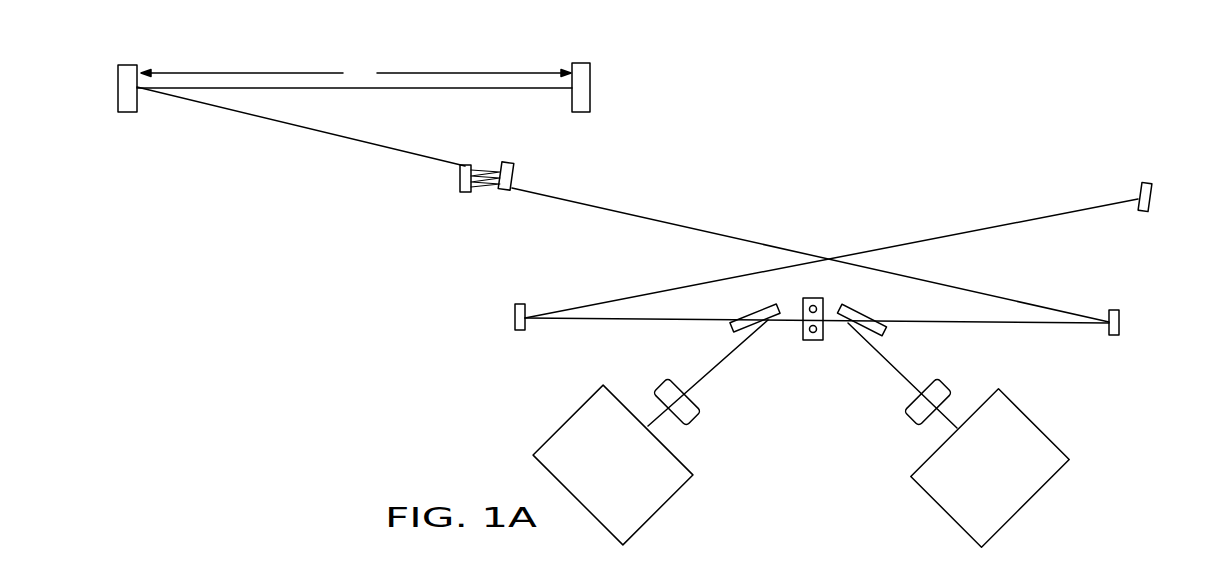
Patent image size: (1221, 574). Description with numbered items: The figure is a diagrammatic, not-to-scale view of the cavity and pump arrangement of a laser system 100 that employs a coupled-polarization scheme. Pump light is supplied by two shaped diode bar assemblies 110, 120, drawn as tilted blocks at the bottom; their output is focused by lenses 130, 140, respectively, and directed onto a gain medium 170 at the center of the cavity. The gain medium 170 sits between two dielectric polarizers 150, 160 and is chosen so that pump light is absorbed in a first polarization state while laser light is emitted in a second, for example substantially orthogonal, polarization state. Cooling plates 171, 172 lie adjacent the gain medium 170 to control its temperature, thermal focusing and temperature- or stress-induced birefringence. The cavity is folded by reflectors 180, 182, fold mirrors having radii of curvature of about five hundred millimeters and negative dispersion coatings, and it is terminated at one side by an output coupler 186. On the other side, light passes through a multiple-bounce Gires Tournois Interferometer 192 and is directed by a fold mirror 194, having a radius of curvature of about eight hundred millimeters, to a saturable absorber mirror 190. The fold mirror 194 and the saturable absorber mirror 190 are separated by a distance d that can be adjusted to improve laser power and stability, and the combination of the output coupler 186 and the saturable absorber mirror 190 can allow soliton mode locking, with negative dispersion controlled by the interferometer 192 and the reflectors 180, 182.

The laser system 100 is at (326, 400).
The shaped diode bar assembly 110 is at (658, 507).
The shaped diode bar assembly 120 is at (940, 507).
The lens 130 is at (697, 418).
The lens 140 is at (910, 420).
The dielectric polarizer 150 is at (733, 330).
The dielectric polarizer 160 is at (887, 332).
The gain medium 170 is at (818, 303).
The cooling plate 171 is at (816, 298).
The cooling plate 172 is at (810, 340).
The reflector 180 is at (520, 330).
The reflector 182 is at (1114, 335).
The output coupler 186 is at (1143, 183).
The saturable absorber mirror 190 is at (590, 86).
The Gires Tournois Interferometer 192 is at (464, 192).
The fold mirror 194 is at (130, 112).